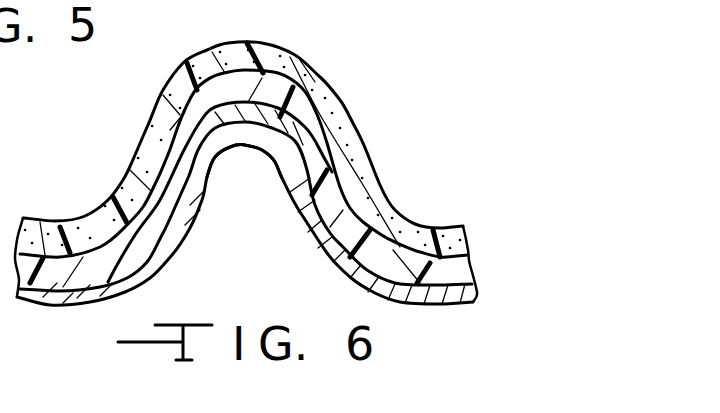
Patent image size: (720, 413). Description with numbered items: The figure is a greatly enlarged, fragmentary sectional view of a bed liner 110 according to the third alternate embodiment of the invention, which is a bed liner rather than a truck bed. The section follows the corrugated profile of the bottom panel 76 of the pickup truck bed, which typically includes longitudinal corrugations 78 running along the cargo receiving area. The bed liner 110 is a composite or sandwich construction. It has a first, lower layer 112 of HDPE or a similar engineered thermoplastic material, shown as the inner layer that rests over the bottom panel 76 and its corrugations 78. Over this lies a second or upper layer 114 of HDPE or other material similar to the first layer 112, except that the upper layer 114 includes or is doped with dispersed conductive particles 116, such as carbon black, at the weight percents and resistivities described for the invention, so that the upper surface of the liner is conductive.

The third alternate embodiment bed liner 110 is at (246, 151).
The dispersed conductive particles 116 is at (334, 113).
The second or upper layer 114 is at (347, 163).
The first, lower layer 112 is at (314, 213).
The bottom panel 76 is at (403, 303).
The longitudinal corrugations 78 is at (247, 160).